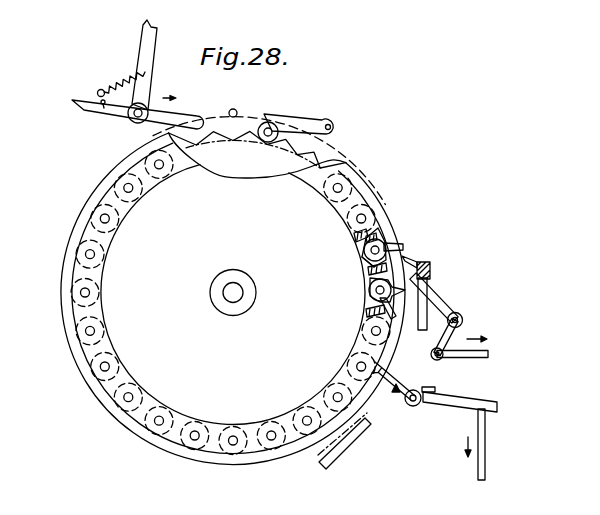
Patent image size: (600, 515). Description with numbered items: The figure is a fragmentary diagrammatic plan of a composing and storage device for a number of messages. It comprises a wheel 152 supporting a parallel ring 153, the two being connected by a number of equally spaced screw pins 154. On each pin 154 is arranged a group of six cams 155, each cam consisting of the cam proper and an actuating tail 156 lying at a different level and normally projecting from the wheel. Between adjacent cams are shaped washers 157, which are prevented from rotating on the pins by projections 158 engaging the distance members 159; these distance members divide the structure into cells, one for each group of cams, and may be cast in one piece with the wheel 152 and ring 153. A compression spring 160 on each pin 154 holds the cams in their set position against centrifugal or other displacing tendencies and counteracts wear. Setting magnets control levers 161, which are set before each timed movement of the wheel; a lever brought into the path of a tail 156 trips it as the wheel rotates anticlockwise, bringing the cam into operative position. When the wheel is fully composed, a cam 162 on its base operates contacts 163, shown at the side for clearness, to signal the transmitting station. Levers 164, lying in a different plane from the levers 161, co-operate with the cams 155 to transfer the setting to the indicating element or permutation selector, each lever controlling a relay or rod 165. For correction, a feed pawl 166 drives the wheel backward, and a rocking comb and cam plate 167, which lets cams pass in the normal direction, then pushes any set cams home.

The wheel 152 is at (120, 275).
The ring 153 is at (112, 192).
The screw pins 154 is at (88, 252).
The cams 155 is at (380, 232).
The actuating tail 156 is at (405, 244).
The shaped washers 157 is at (368, 249).
The projections 158 is at (366, 238).
The distance members 159 is at (358, 231).
The compression spring 160 is at (433, 292).
The levers 161 is at (462, 320).
The cam 162 is at (318, 455).
The contacts 163 is at (340, 447).
The levers 164 is at (407, 380).
The rod 165 is at (485, 437).
The feed pawl 166 is at (178, 120).
The rocking comb and cam plate 167 is at (430, 258).